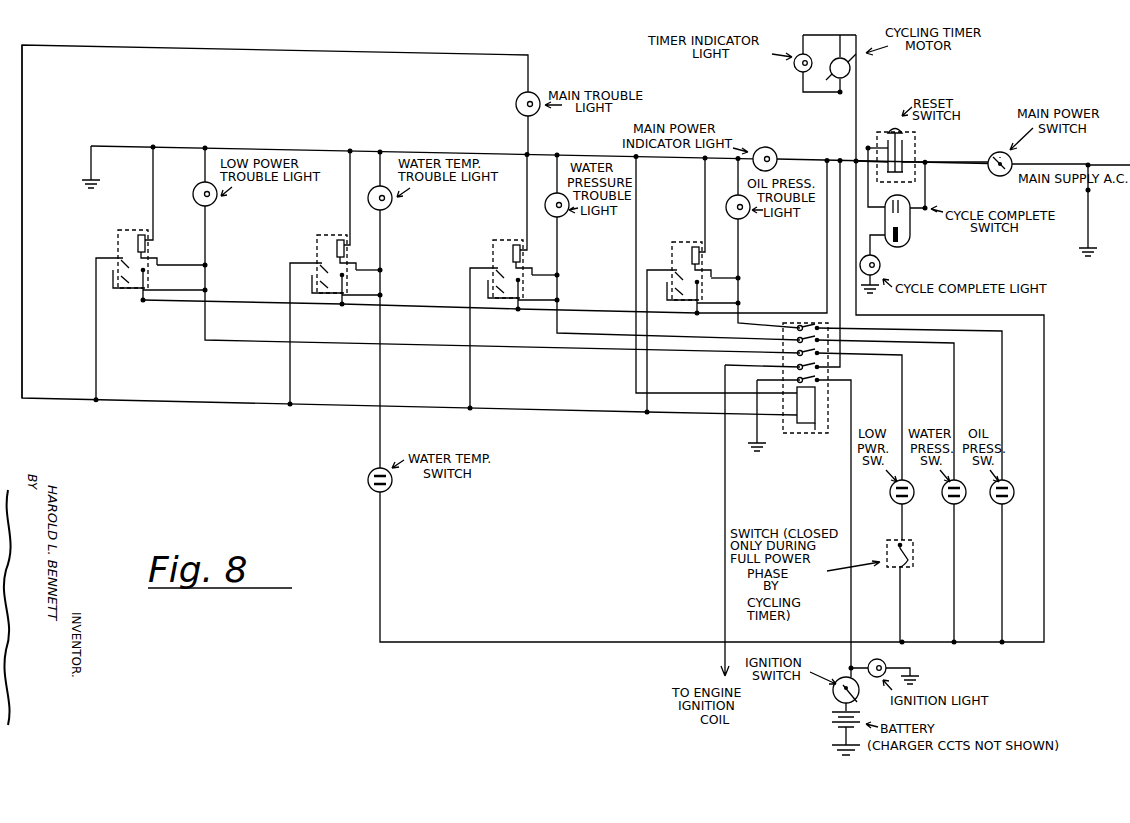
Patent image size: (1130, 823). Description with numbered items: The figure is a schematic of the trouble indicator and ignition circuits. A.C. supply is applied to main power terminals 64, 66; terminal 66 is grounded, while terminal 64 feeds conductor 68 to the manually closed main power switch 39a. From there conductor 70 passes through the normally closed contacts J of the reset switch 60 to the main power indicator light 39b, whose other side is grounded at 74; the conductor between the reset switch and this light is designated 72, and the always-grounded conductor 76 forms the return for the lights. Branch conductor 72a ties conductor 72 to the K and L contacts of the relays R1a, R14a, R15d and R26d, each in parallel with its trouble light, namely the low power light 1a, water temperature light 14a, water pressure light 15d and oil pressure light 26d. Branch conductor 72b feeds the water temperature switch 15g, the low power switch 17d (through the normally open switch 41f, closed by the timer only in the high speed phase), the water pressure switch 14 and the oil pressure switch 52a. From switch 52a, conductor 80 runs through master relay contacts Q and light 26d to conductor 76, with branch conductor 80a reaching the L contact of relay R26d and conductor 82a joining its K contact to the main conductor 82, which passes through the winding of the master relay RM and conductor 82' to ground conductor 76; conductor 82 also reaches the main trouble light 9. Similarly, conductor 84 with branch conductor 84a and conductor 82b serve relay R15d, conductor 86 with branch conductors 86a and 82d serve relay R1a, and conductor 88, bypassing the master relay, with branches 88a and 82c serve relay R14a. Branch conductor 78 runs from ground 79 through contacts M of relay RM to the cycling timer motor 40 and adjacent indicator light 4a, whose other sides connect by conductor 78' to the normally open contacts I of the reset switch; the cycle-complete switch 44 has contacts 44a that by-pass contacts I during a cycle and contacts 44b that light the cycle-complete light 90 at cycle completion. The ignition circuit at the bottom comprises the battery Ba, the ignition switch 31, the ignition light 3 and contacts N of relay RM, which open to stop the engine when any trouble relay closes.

The ground connection 74 is at (88, 179).
The main conductor 82 is at (409, 230).
The branch conductor 82d is at (96, 359).
The branch conductor 82c is at (291, 335).
The branch conductor 82b is at (471, 395).
The conductor 82a is at (649, 380).
The conductor 82' is at (692, 275).
The relay R1a is at (142, 234).
The low power light 1a is at (214, 201).
The branch conductor 86a is at (220, 286).
The conductor 86 is at (397, 343).
The relay R14a is at (337, 238).
The water temperature light 14a is at (388, 206).
The branch conductor 88a is at (381, 297).
The conductor 88 is at (378, 437).
The relay R15d is at (512, 242).
The water pressure light 15d is at (562, 215).
The branch conductor 84a is at (559, 299).
The conductor 84 is at (556, 326).
The relay R26d is at (698, 245).
The oil pressure light 26d is at (745, 218).
The branch conductor 80a is at (740, 304).
The conductor 80 is at (734, 318).
The main trouble light 9 is at (516, 103).
The ground conductor 76 is at (612, 155).
The conductor 72 is at (803, 161).
The branch conductor 72a is at (827, 268).
The branch conductor 72b is at (937, 317).
The main power indicator light 39b is at (770, 148).
The indicator light 4a is at (797, 70).
The cycling timer motor 40 is at (858, 70).
The conductor 78' is at (876, 98).
The reset switch 60 is at (893, 125).
The conductor 70 is at (937, 164).
The main power switch 39a is at (989, 170).
The conductor 68 is at (1045, 165).
The main power terminal 64 is at (1090, 166).
The main power terminal 66 is at (1088, 191).
The contacts 44a is at (912, 202).
The cycle-complete switch 44 is at (910, 226).
The contacts 44b is at (908, 243).
The cycle-complete light 90 is at (882, 265).
The ground 79 is at (755, 441).
The branch conductor 78 is at (792, 391).
The master relay RM is at (815, 430).
The water temperature switch 15g is at (386, 488).
The low power switch 17d is at (897, 505).
The water pressure switch 14 is at (948, 510).
The oil pressure switch 52a is at (1001, 505).
The normally open switch 41f is at (910, 566).
The ignition light 3 is at (886, 662).
The ignition switch 31 is at (855, 697).
The battery Ba is at (834, 730).